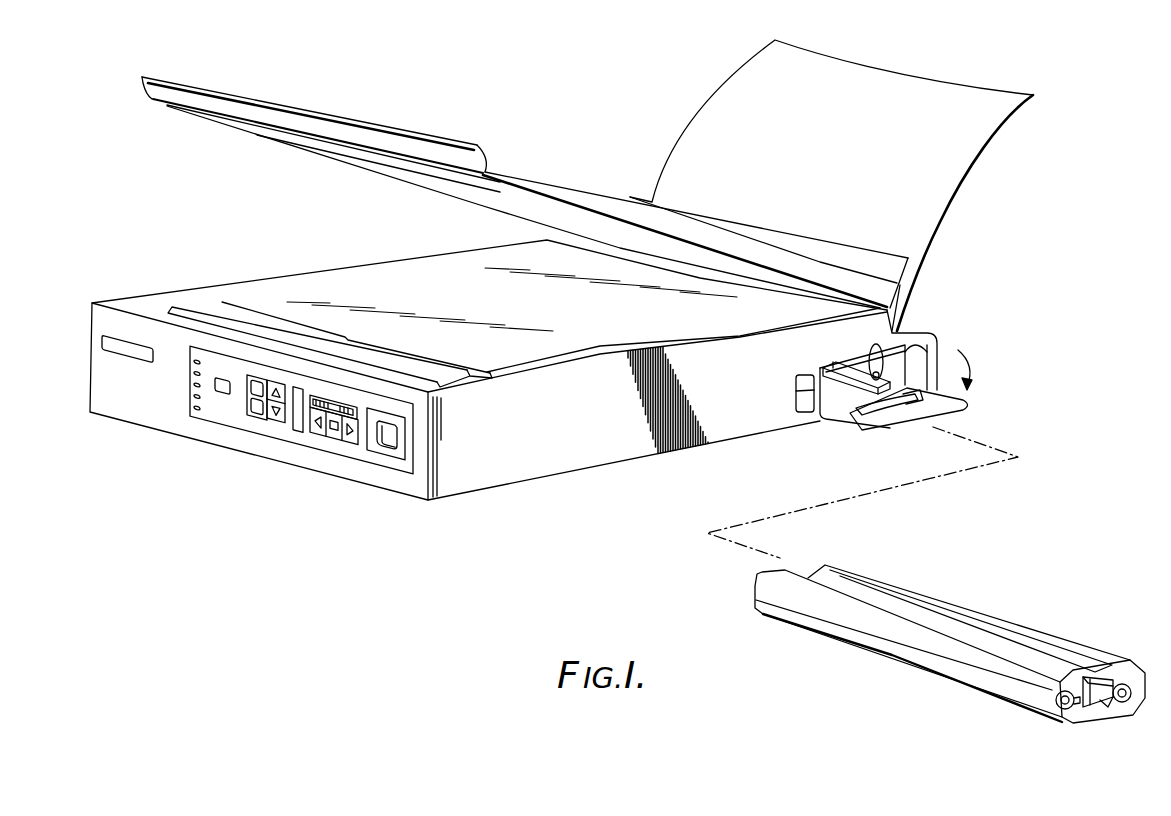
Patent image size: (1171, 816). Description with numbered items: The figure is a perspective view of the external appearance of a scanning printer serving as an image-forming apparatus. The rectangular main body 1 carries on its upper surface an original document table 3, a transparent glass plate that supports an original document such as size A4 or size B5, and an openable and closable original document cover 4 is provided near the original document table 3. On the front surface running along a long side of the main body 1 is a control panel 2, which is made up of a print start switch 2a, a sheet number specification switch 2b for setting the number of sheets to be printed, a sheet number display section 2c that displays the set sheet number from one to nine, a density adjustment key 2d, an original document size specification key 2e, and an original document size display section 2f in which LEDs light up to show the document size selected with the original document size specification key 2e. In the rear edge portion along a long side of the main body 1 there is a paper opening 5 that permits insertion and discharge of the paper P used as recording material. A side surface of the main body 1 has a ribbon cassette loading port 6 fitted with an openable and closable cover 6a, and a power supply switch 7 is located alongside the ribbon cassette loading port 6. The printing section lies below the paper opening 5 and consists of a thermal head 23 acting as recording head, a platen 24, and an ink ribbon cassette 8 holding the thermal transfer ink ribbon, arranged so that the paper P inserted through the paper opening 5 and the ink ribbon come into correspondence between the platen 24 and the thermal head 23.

The main body 1 is at (593, 458).
The control panel 2 is at (313, 495).
The print start switch 2a is at (393, 455).
The sheet number specification switch 2b is at (280, 424).
The sheet number display section 2c is at (257, 420).
The density adjustment key 2d is at (333, 441).
The original document size specification key 2e is at (223, 394).
The original document size display section 2f is at (196, 410).
The original document table 3 is at (372, 290).
The original document cover 4 is at (577, 190).
The paper P is at (962, 162).
The paper opening 5 is at (910, 332).
The ribbon cassette loading port 6 is at (927, 353).
The cover 6a is at (957, 405).
The power supply switch 7 is at (800, 400).
The thermal head 23 is at (833, 395).
The platen 24 is at (878, 380).
The ink ribbon cassette 8 is at (1108, 665).